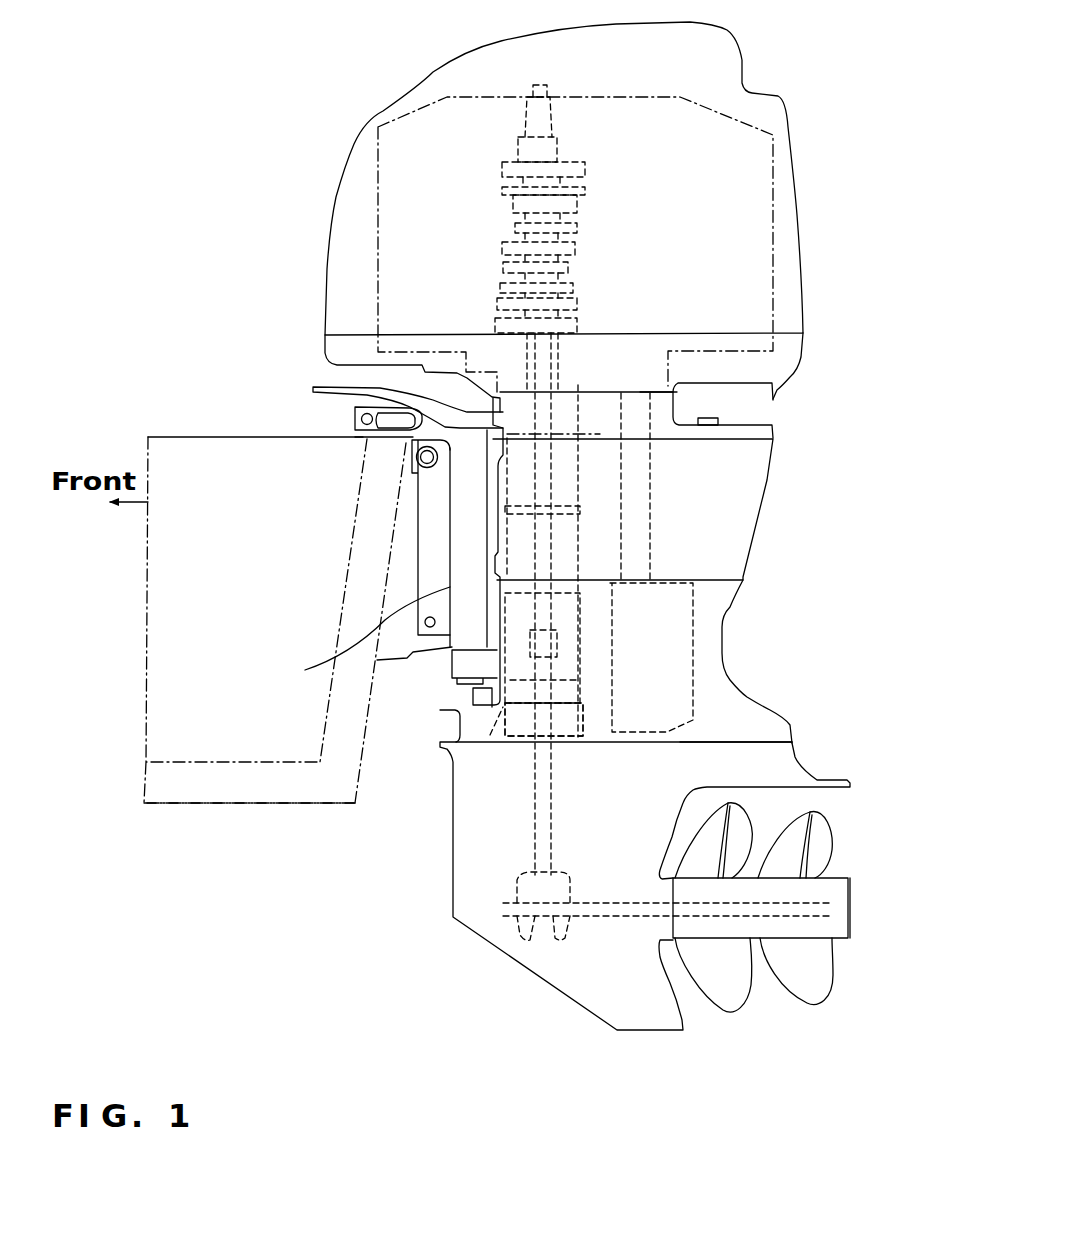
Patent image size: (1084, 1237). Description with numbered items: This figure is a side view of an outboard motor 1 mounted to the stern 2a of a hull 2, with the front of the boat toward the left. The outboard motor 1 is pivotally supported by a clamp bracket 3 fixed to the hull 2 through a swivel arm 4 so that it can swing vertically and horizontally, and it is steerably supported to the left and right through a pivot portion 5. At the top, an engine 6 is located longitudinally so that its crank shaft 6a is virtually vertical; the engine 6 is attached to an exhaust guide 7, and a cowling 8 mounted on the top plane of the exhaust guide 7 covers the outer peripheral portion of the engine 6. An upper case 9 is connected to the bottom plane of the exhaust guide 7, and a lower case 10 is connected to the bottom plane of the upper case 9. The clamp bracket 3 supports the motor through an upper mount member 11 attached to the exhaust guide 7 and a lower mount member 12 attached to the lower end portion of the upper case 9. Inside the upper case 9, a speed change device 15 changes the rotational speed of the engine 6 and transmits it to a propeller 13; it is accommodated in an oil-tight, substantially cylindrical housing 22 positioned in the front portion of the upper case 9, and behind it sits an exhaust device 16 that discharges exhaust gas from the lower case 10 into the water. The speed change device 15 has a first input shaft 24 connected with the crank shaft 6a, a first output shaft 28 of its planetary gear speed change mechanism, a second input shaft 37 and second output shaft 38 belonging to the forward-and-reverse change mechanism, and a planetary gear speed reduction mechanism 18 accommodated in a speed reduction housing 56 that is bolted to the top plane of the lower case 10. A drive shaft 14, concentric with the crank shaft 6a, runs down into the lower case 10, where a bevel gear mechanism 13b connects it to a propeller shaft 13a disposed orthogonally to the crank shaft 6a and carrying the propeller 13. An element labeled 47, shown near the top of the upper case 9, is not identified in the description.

The outboard motor 1 is at (306, 160).
The hull 2 is at (190, 435).
The stern 2a is at (371, 735).
The clamp bracket 3 is at (394, 548).
The swivel arm 4 is at (371, 443).
The pivot portion 5 is at (367, 635).
The engine 6 is at (375, 160).
The crank shaft 6a is at (573, 290).
The exhaust guide 7 is at (677, 413).
The cowling 8 is at (790, 140).
The upper case 9 is at (763, 510).
The lower case 10 is at (803, 763).
The upper mount member 11 is at (498, 397).
The lower mount member 12 is at (492, 636).
The propeller 13 is at (833, 843).
The propeller shaft 13a is at (637, 920).
The bevel gear mechanism 13b is at (573, 880).
The drive shaft 14 is at (557, 803).
The speed change device 15 is at (590, 487).
The exhaust device 16 is at (660, 535).
The planetary gear speed reduction mechanism 18 is at (583, 720).
The housing 22 is at (581, 562).
The first input shaft 24 is at (560, 408).
The first output shaft 28 is at (552, 542).
The second input shaft 37 is at (550, 620).
The second output shaft 38 is at (560, 677).
The exhaust guide 47 is at (590, 437).
The speed reduction housing 56 is at (492, 745).